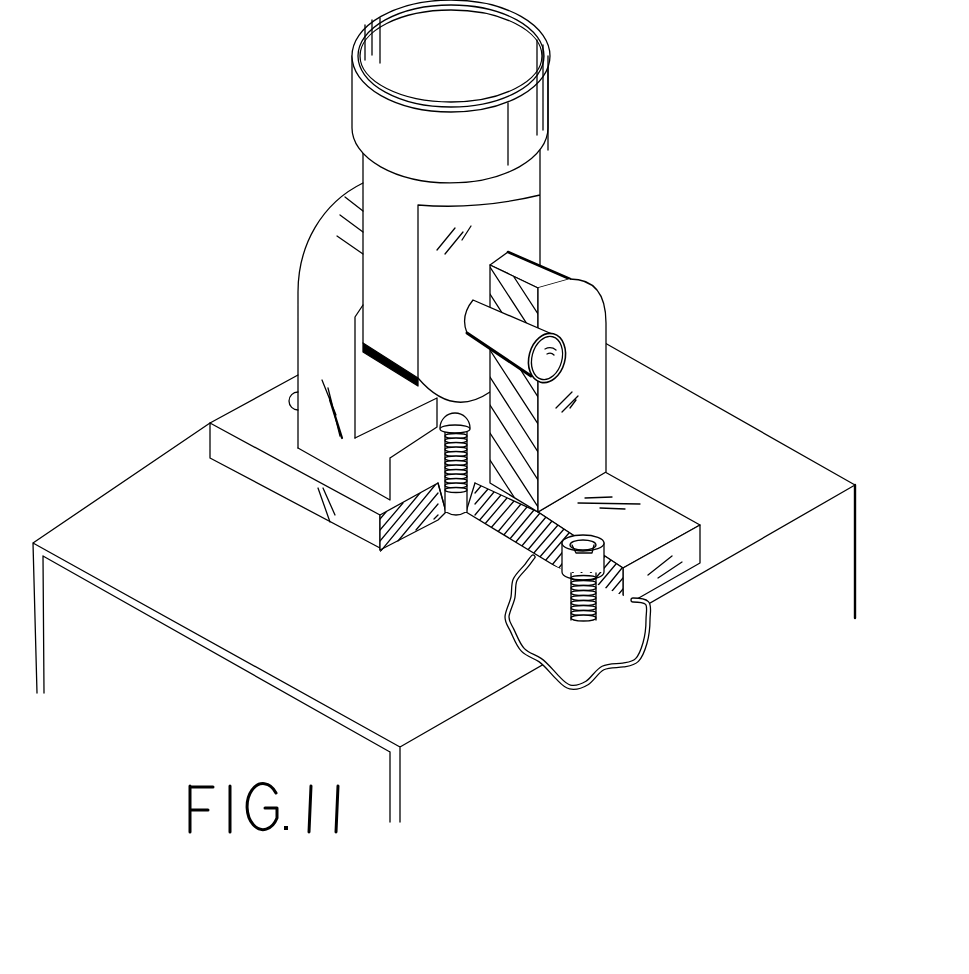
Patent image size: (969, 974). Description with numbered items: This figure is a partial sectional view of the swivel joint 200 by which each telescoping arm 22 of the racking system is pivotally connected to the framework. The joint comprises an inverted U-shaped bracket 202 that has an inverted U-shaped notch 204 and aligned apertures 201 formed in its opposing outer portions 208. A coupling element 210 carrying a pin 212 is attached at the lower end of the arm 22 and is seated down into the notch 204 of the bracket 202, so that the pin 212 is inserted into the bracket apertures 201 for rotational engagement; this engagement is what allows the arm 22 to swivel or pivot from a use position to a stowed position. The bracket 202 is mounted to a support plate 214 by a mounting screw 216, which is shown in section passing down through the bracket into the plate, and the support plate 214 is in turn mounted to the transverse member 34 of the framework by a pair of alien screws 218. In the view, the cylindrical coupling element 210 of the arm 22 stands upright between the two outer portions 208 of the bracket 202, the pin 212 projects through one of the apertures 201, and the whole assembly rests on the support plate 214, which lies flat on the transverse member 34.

The telescoping arm 22 is at (547, 97).
The transverse member 34 is at (785, 468).
The swivel joint 200 is at (360, 184).
The aligned apertures 201 is at (550, 333).
The inverted U-shaped bracket 202 is at (290, 297).
The inverted U-shaped notch 204 is at (387, 438).
The opposing outer portions 208 is at (308, 243).
The coupling element 210 is at (532, 203).
The pin 212 is at (558, 362).
The support plate 214 is at (658, 520).
The mounting screw 216 is at (453, 513).
The alien screws 218 is at (291, 400).